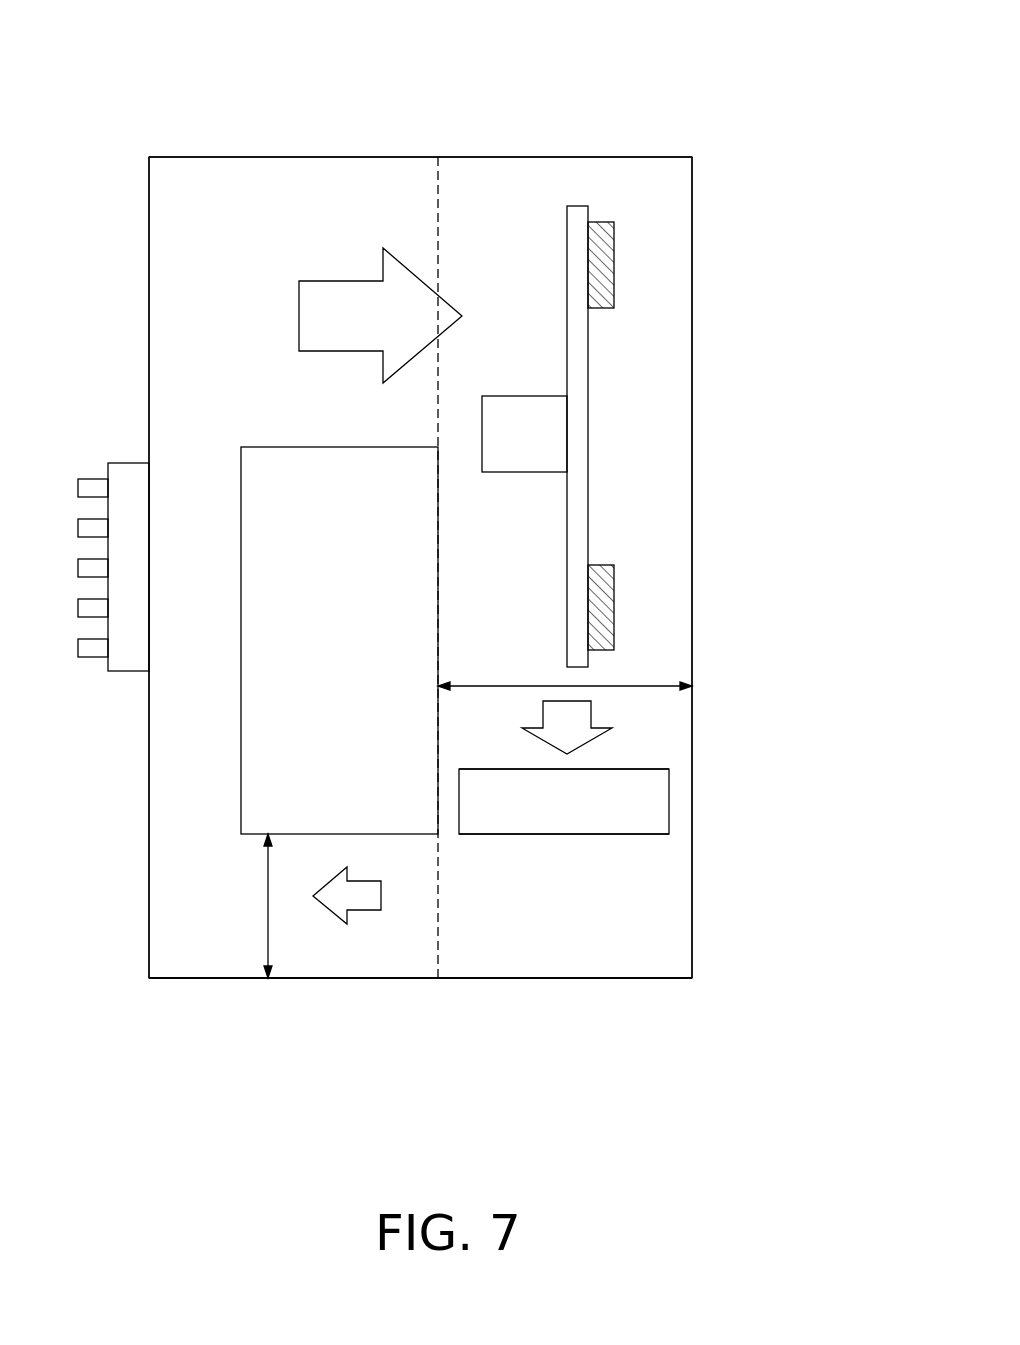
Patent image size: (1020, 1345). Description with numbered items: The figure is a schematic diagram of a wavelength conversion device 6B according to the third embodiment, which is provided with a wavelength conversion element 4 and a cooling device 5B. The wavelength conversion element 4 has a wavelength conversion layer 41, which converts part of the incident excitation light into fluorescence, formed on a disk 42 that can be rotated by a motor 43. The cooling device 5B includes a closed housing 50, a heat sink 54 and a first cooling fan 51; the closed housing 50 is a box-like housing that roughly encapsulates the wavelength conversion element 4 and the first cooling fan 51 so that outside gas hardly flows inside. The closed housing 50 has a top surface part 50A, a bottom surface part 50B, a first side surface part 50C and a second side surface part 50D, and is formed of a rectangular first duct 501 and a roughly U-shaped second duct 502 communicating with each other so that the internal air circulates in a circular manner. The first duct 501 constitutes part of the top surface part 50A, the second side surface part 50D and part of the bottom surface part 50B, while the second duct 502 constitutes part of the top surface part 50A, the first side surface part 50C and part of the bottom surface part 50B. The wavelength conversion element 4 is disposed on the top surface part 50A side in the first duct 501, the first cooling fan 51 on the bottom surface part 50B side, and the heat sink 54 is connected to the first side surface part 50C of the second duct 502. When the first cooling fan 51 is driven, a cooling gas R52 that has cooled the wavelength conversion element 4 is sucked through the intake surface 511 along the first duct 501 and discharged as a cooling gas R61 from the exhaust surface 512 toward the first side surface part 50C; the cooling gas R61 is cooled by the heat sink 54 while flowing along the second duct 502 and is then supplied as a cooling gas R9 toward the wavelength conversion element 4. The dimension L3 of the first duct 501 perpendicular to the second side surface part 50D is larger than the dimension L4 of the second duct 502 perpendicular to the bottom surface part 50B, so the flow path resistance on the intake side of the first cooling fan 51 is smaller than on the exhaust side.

The wavelength conversion device 6B is at (746, 76).
The closed housing 50 is at (560, 157).
The top surface part 50A is at (645, 157).
The bottom surface part 50B is at (207, 978).
The first side surface part 50C is at (149, 836).
The second side surface part 50D is at (692, 327).
The cooling device 5B is at (480, 1015).
The first duct 501 is at (640, 978).
The second duct 502 is at (307, 978).
The heat sink 54 is at (127, 663).
The wavelength conversion element 4 is at (573, 420).
The wavelength conversion layer 41 is at (608, 592).
The disk 42 is at (577, 537).
The motor 43 is at (525, 398).
The cooling gas R9 is at (332, 289).
The dimension L3 is at (503, 686).
The cooling gas R52 is at (583, 714).
The first cooling fan 51 is at (669, 803).
The intake surface 511 is at (602, 769).
The exhaust surface 512 is at (569, 835).
The dimension L4 is at (268, 897).
The cooling gas R61 is at (362, 905).